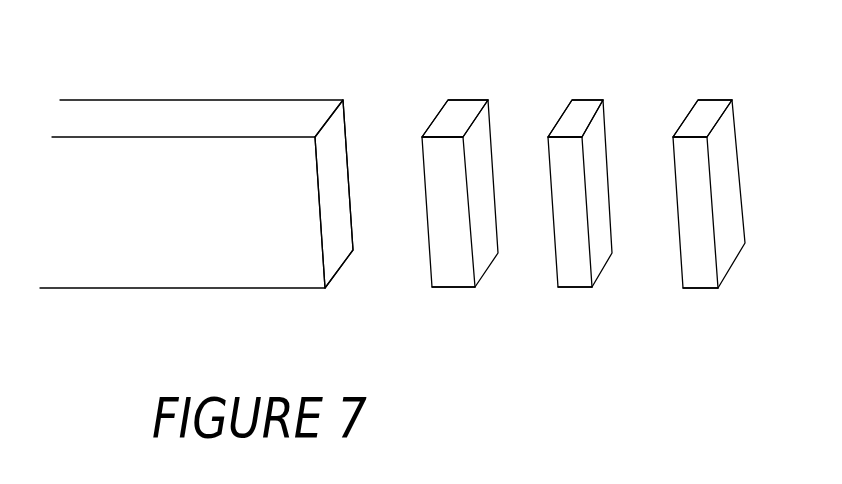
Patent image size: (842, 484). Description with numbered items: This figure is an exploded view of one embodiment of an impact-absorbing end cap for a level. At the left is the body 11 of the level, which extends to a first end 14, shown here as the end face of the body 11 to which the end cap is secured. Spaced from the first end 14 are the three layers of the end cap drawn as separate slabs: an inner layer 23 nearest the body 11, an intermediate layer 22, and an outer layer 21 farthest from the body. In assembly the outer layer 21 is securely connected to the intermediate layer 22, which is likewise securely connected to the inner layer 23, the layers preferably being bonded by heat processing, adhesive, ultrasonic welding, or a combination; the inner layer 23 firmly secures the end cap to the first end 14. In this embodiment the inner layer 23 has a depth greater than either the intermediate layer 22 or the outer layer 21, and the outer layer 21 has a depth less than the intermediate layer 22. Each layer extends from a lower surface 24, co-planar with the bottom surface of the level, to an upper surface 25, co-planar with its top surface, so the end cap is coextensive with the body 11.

The body 11 is at (221, 166).
The first end 14 is at (328, 162).
The outer layer 21 is at (723, 187).
The intermediate layer 22 is at (593, 255).
The inner layer 23 is at (477, 255).
The lower surface 24 is at (443, 288).
The upper surface 25 is at (457, 110).